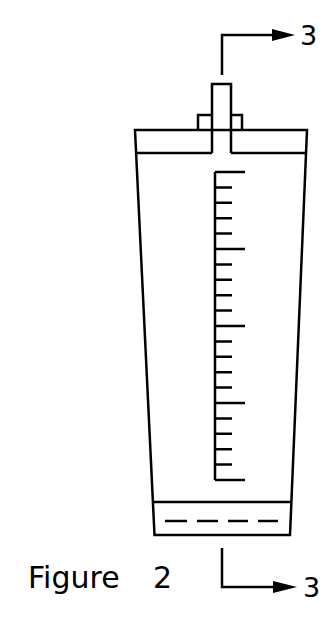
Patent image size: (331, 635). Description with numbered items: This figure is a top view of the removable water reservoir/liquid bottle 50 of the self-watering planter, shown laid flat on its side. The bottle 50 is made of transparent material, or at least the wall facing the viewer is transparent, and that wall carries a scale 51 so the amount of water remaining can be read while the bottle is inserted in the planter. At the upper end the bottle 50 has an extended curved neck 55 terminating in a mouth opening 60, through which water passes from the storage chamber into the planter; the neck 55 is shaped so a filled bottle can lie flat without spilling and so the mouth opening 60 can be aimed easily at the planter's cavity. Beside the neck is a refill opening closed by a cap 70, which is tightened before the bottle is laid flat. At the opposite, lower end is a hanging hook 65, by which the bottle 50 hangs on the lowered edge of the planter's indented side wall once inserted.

The water reservoir/liquid bottle 50 is at (124, 289).
The scale 51 is at (215, 366).
The extended curved neck 55 is at (207, 97).
The mouth opening 60 is at (220, 83).
The hanging hook 65 is at (153, 518).
The refill cap 70 is at (198, 122).